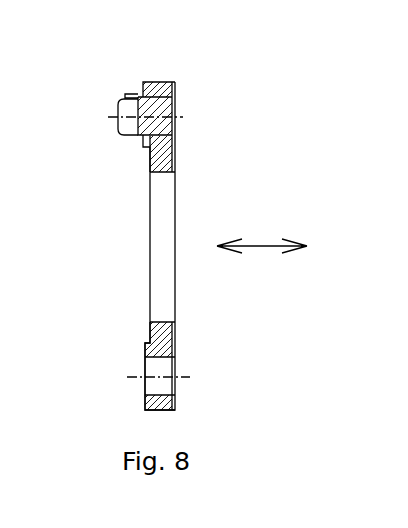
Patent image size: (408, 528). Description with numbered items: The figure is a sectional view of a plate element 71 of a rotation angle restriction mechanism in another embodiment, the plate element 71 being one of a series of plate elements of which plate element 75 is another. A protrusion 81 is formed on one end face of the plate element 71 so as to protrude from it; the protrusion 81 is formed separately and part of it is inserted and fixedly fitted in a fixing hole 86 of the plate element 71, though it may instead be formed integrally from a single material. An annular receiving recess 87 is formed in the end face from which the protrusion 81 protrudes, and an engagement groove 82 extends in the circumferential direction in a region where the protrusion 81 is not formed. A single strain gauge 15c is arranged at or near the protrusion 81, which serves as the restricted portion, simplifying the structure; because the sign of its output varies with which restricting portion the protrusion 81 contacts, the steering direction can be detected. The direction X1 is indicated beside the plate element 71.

The plate element 71 is at (198, 55).
The plate element 75 is at (166, 80).
The fixing hole 86 is at (172, 125).
The protrusion 81 is at (123, 118).
The strain gauge 15c is at (131, 96).
The annular receiving recess 87 is at (149, 163).
The engagement groove 82 is at (160, 395).
The sliding direction X1 is at (262, 245).